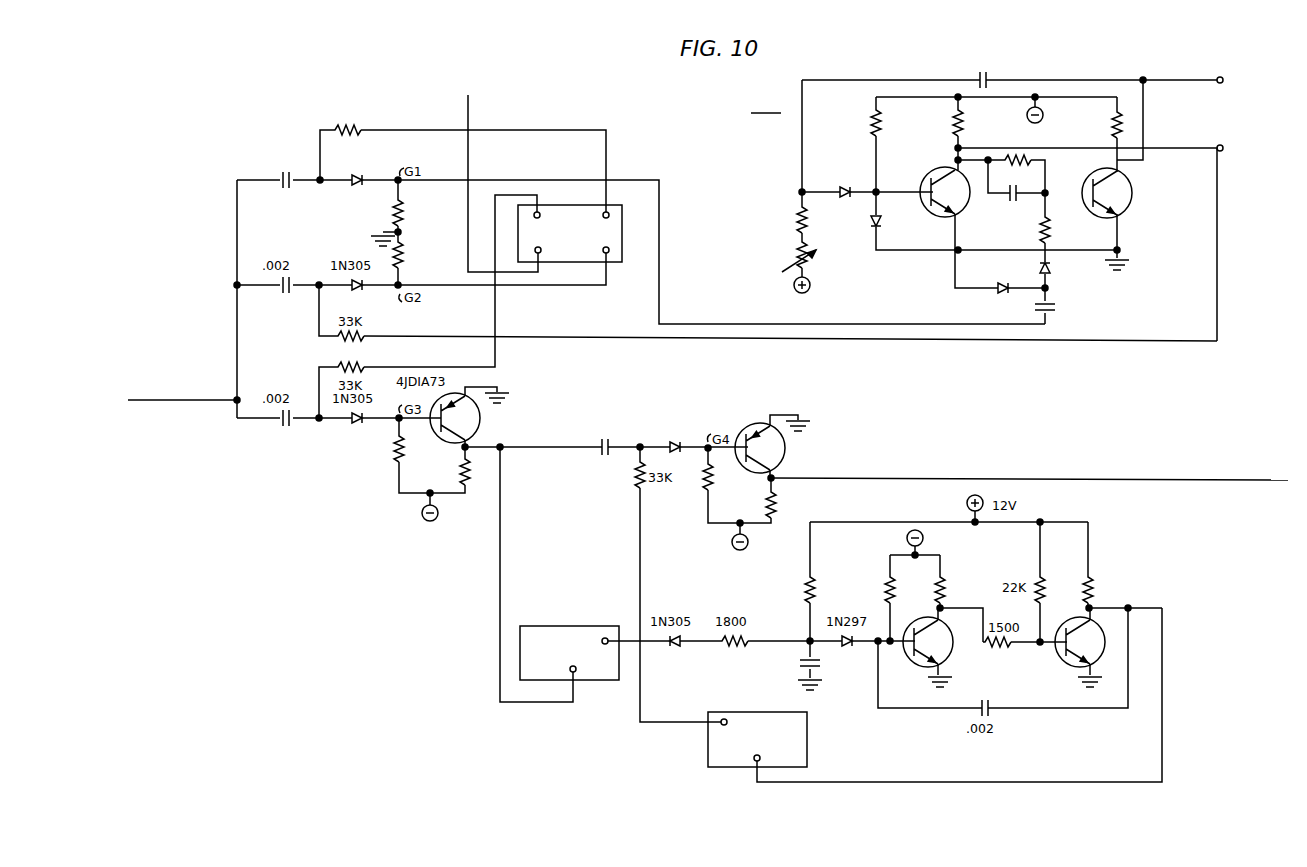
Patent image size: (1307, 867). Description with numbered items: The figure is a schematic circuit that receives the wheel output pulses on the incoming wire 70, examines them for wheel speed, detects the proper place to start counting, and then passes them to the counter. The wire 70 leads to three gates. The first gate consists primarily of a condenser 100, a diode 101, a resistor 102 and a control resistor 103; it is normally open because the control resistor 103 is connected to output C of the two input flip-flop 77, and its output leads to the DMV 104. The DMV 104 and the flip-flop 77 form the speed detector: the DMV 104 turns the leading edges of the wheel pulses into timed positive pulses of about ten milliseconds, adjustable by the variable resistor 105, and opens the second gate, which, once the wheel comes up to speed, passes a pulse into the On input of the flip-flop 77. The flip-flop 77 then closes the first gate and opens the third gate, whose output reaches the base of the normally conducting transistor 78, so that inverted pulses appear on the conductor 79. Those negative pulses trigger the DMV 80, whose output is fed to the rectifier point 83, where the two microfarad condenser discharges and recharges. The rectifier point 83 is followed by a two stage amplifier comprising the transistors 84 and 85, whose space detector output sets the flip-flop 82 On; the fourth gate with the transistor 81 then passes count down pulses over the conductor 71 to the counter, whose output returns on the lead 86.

The wire 70 is at (150, 398).
The conductor 71 is at (1113, 479).
The flip-flop 77 is at (615, 212).
The transistor 78 is at (470, 428).
The conductor 79 is at (510, 450).
The DMV 80 is at (601, 624).
The transistor 81 is at (748, 428).
The flip-flop 82 is at (795, 711).
The rectifier point 83 is at (808, 639).
The transistor 84 is at (945, 628).
The transistor 85 is at (1078, 618).
The counter output lead 86 is at (470, 123).
The condenser 100 is at (297, 185).
The diode 101 is at (351, 184).
The resistor 102 is at (395, 202).
The control resistor 103 is at (372, 126).
The DMV 104 is at (982, 194).
The variable resistor 105 is at (795, 250).